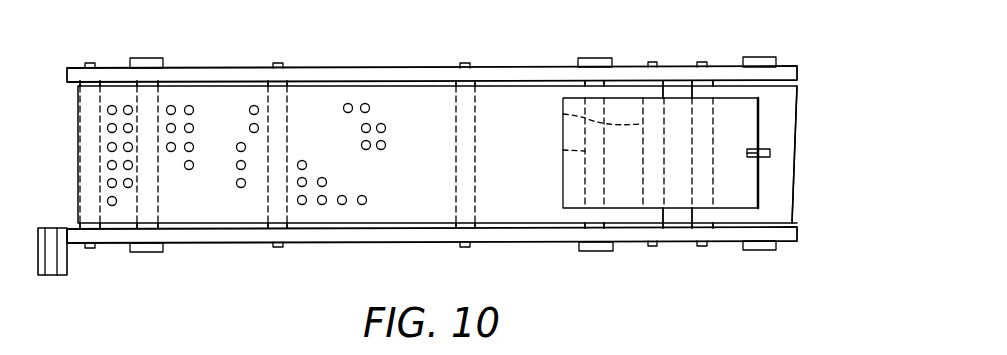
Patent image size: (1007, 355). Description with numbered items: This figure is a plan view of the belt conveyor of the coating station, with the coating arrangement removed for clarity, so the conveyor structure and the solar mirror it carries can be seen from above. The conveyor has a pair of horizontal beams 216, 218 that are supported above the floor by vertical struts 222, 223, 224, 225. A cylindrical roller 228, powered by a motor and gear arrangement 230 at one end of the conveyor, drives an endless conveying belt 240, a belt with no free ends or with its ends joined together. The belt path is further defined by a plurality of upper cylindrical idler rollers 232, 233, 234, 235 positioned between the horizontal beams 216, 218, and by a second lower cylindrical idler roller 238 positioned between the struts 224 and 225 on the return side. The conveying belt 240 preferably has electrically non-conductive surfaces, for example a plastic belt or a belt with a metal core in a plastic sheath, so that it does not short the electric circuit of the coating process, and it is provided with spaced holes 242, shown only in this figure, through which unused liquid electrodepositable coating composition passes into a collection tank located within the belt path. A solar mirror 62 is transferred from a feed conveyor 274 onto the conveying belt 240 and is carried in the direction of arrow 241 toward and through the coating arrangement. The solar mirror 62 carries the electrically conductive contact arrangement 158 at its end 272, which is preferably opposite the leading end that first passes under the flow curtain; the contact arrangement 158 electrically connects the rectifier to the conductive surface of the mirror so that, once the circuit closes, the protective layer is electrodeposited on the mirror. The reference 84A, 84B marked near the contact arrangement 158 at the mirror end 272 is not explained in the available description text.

The horizontal beam 218 is at (331, 67).
The horizontal beam 216 is at (338, 243).
The vertical strut 223 is at (148, 57).
The vertical strut 224 is at (595, 58).
The feed conveyor 274 is at (788, 58).
The vertical strut 222 is at (153, 252).
The vertical strut 225 is at (590, 252).
The motor and gear arrangement 230 is at (68, 262).
The cylindrical roller 228 is at (90, 170).
The upper cylindrical idler roller 232 is at (160, 177).
The upper cylindrical idler roller 233 is at (287, 130).
The upper cylindrical idler roller 234 is at (455, 133).
The spaced holes 242 is at (171, 105).
The endless conveying belt 240 is at (395, 184).
The arrow 241 is at (437, 47).
The end of the solar mirror 272 is at (758, 133).
The solar mirror 62 is at (747, 113).
The upper cylindrical idler roller 235 is at (563, 114).
The second lower cylindrical idler roller 238 is at (563, 150).
The connector 84A is at (799, 177).
The connector 84B is at (770, 153).
The electrically conductive contact arrangement 158 is at (767, 160).